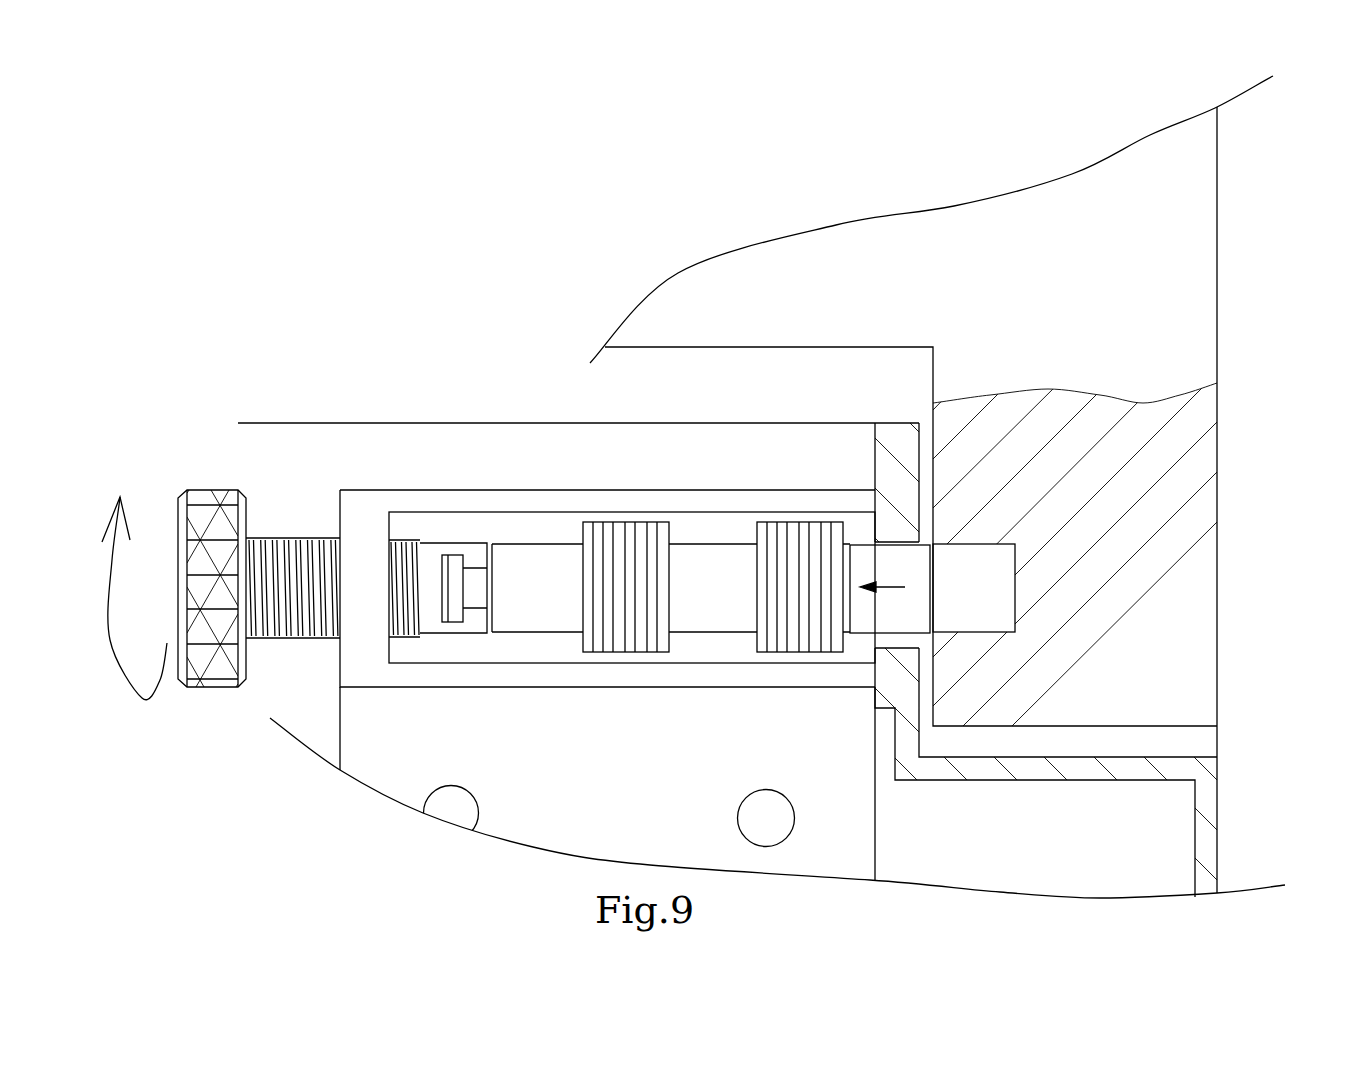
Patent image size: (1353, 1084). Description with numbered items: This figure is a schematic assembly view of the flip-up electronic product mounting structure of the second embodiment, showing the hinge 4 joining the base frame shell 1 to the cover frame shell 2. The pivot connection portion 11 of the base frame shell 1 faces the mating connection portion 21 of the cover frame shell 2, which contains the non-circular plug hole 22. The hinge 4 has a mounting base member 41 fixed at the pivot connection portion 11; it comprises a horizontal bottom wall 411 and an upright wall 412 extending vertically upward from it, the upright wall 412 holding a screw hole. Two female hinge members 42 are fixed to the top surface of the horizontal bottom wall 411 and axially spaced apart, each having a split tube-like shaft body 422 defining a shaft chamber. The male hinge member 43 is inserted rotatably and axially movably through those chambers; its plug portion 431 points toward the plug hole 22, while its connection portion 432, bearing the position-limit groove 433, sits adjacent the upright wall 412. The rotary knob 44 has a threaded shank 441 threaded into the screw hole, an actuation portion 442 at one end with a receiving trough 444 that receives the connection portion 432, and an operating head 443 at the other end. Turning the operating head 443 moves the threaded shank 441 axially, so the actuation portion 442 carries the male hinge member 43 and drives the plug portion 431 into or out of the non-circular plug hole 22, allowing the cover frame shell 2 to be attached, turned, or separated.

The base frame shell 1 is at (316, 422).
The pivot connection portion 11 is at (372, 422).
The cover frame shell 2 is at (1217, 302).
The mating connection portion 21 is at (1203, 608).
The non-circular plug hole 22 is at (1015, 593).
The hinge 4 is at (335, 692).
The mounting base member 41 is at (543, 835).
The horizontal bottom wall 411 is at (857, 525).
The upright wall 412 is at (362, 622).
The female hinge member 42 is at (597, 520).
The split tube-like shaft body 422 is at (765, 520).
The male hinge member 43 is at (702, 635).
The plug portion 431 is at (867, 627).
The connection portion 432 is at (455, 610).
The position-limit groove 433 is at (478, 592).
The rotary knob 44 is at (210, 490).
The threaded shank 441 is at (318, 538).
The actuation portion 442 is at (478, 552).
The operating head 443 is at (205, 680).
The receiving trough 444 is at (440, 575).